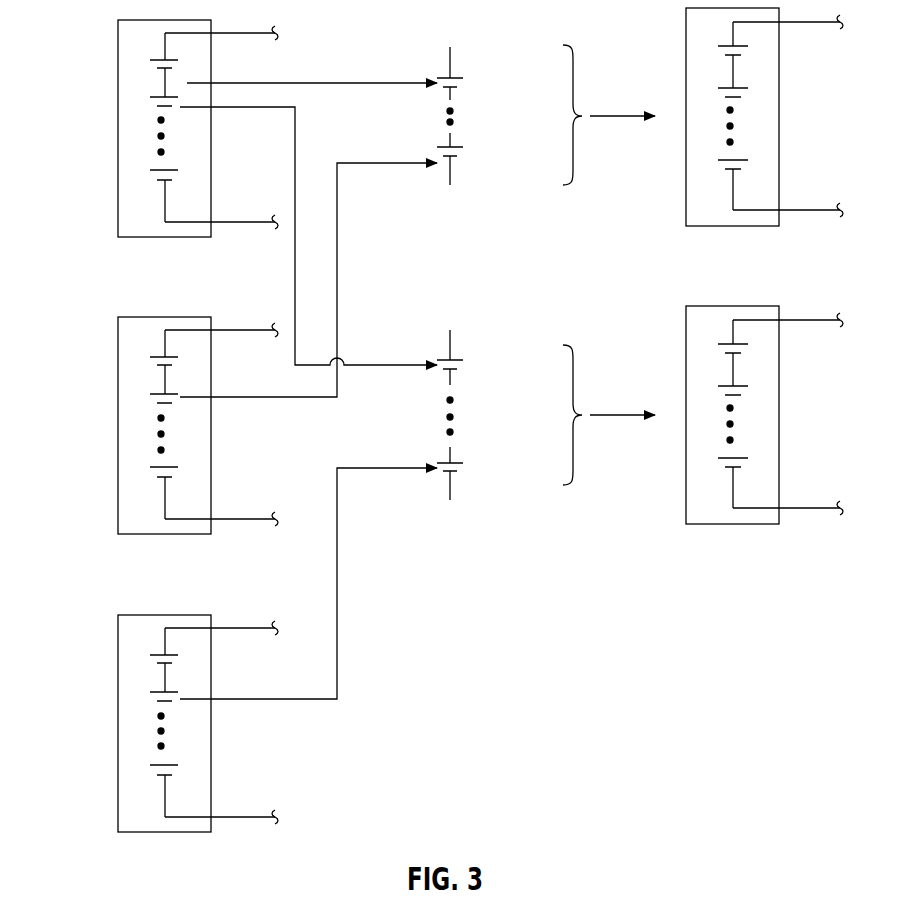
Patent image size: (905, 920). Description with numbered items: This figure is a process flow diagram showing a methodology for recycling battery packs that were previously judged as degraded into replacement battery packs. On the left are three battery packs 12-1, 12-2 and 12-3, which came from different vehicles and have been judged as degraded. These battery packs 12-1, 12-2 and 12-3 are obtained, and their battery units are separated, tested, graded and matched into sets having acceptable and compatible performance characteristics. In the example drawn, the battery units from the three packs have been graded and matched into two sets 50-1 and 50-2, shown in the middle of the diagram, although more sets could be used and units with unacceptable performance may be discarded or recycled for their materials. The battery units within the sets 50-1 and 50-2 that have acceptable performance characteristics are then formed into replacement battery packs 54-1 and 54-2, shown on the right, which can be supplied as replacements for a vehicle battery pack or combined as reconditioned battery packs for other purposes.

The battery pack 12-1 is at (118, 131).
The battery pack 12-2 is at (118, 431).
The battery pack 12-3 is at (118, 726).
The set 50-1 is at (468, 60).
The set 50-2 is at (468, 343).
The replacement battery pack 54-1 is at (779, 115).
The replacement battery pack 54-2 is at (779, 415).